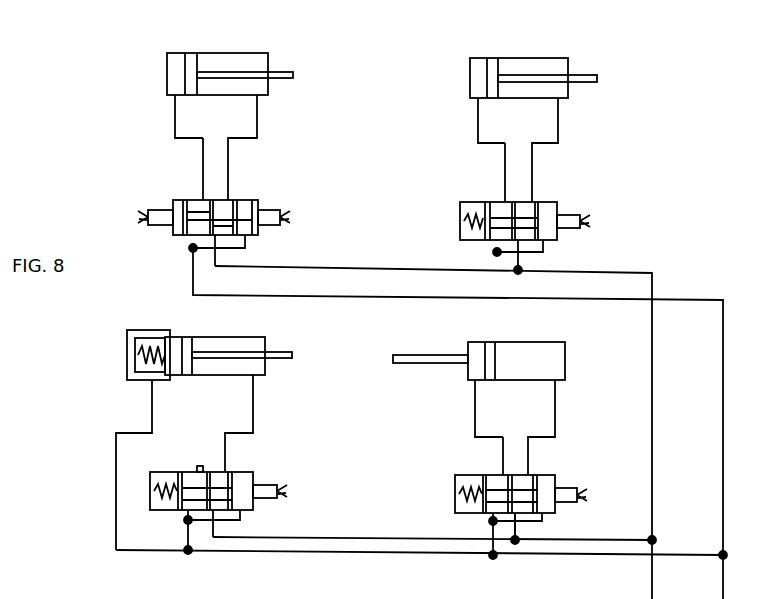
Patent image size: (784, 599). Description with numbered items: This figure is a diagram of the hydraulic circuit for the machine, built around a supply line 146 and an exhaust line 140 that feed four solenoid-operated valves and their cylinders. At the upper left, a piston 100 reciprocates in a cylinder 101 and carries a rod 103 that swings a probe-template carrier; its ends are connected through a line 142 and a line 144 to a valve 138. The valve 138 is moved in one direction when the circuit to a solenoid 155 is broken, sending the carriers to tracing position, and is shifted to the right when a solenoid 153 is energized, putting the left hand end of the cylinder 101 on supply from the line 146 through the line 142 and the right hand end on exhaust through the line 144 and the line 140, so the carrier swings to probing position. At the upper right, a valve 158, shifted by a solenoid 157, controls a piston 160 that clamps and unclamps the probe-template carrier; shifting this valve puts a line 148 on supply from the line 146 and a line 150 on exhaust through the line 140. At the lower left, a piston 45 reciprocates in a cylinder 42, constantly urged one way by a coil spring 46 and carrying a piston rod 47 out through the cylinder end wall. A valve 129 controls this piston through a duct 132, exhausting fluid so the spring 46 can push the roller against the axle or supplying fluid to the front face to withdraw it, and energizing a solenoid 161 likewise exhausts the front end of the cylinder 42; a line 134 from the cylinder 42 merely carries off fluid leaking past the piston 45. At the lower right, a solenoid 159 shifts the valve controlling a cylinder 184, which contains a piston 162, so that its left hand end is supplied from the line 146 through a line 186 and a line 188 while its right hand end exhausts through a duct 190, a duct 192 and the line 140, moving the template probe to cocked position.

The piston 100 is at (194, 52).
The cylinder 101 is at (246, 53).
The rod 103 is at (286, 70).
The line 144 is at (258, 124).
The line 142 is at (202, 154).
The valve 138 is at (241, 200).
The solenoid 155 is at (159, 210).
The solenoid 153 is at (276, 211).
The piston 160 is at (493, 57).
The line 150 is at (558, 126).
The line 148 is at (489, 143).
The valve 158 is at (543, 203).
The solenoid 157 is at (579, 214).
The supply line 146 is at (322, 266).
The exhaust line 140 is at (723, 413).
The cylinder 42 is at (128, 340).
The coil spring 46 is at (149, 345).
The piston 45 is at (190, 338).
The piston rod 47 is at (286, 353).
The line 134 is at (152, 408).
The duct 132 is at (253, 408).
The valve 129 is at (237, 472).
The solenoid 161 is at (277, 488).
The cylinder 184 is at (545, 342).
The piston 162 is at (491, 346).
The duct 190 is at (555, 410).
The line 188 is at (475, 405).
The solenoid 159 is at (565, 490).
The duct 192 is at (491, 524).
The line 186 is at (516, 526).